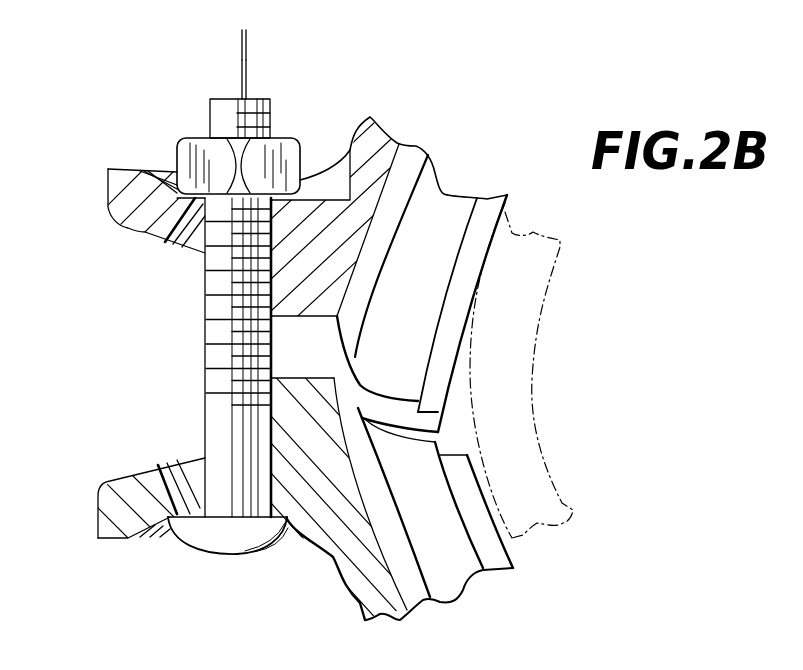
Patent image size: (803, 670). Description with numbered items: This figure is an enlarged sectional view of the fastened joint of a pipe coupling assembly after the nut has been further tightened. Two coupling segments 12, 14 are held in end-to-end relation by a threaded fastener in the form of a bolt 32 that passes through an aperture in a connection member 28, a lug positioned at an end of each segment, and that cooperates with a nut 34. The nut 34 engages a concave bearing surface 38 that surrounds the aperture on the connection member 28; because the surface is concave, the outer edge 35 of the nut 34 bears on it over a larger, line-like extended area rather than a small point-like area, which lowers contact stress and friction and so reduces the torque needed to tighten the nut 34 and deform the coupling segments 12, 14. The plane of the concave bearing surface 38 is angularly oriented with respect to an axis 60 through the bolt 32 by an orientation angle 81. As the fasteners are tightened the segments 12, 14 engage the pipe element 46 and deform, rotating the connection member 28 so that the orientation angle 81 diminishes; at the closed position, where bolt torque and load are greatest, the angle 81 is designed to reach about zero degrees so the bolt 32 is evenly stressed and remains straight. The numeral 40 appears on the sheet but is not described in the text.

The coupling segment 12 is at (383, 140).
The coupling segment 14 is at (383, 613).
The connection member 28 is at (116, 180).
The bolt 32 is at (205, 325).
The nut 34 is at (300, 151).
The outer edge of nut 35 is at (160, 200).
The concave bearing surface 38 is at (162, 532).
The housing 40 is at (562, 669).
The pipe element 46 is at (518, 372).
The axis 60 is at (240, 66).
The orientation angle 81 is at (243, 43).